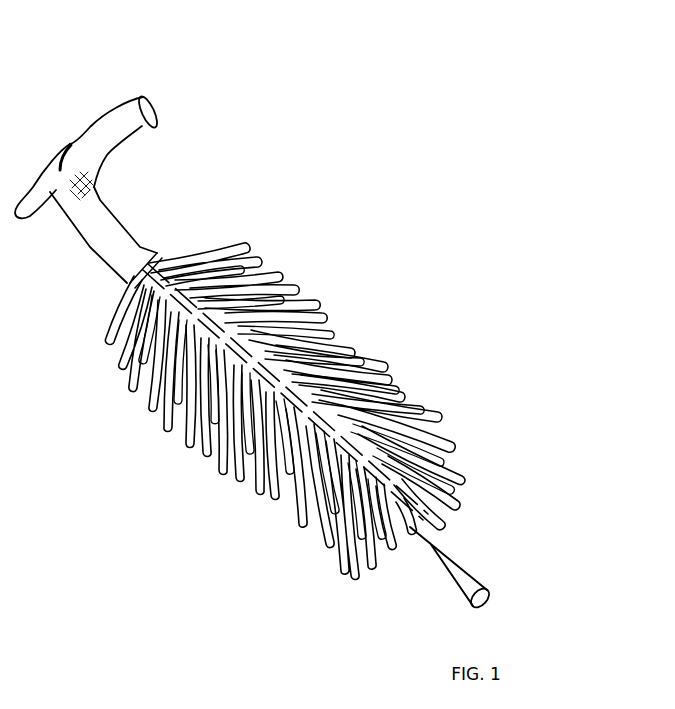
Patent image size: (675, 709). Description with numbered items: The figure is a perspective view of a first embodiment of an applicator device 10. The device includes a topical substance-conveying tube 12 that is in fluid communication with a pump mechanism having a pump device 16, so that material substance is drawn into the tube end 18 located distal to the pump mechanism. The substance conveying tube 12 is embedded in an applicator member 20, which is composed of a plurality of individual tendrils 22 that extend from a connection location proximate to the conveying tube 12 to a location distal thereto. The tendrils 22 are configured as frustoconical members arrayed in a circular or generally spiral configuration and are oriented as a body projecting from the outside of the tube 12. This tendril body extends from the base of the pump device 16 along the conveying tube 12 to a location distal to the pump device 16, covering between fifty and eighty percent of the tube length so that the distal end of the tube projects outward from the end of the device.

The applicator device 10 is at (125, 92).
The topical substance-conveying tube 12 is at (462, 548).
The pump device 16 is at (143, 219).
The tube end 18 is at (485, 615).
The applicator member 20 is at (435, 402).
The tendrils 22 is at (303, 387).